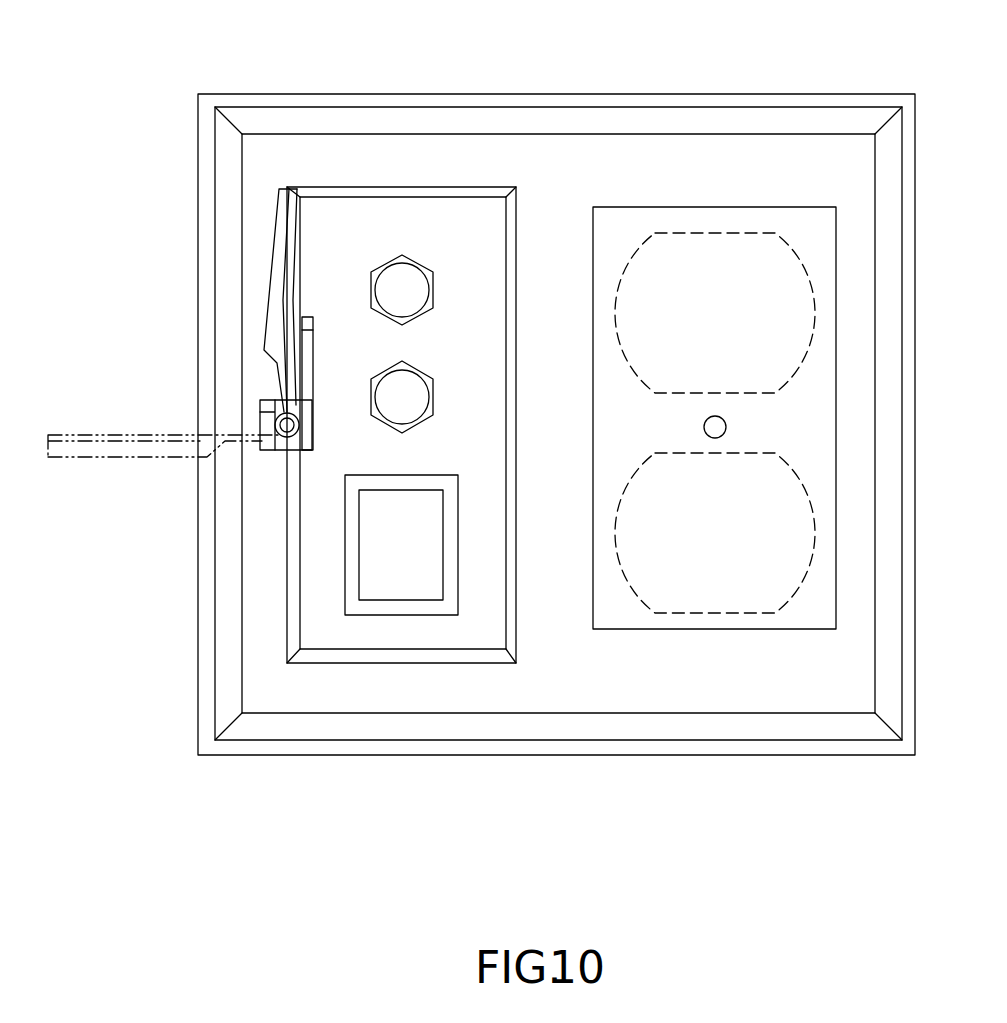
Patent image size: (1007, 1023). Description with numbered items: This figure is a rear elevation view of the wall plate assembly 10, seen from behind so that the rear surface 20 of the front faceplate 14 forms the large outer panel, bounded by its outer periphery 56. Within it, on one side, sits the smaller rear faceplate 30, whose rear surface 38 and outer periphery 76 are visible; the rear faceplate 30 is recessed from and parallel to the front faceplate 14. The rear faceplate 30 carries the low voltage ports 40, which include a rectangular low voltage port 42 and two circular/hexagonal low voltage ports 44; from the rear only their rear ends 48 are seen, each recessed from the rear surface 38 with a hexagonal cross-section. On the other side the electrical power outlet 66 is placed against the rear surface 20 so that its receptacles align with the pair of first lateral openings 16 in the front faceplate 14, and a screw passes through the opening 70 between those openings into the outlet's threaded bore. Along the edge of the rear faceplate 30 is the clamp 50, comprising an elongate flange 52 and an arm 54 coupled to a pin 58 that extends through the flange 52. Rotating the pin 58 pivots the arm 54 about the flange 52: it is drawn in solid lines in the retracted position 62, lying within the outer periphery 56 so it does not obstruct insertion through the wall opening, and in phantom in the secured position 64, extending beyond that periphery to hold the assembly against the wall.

The wall plate assembly 10 is at (506, 78).
The front faceplate 14 is at (528, 196).
The first lateral openings 16 is at (617, 303).
The rear surface 20 is at (620, 701).
The rear faceplate 30 is at (342, 180).
The rear surface 38 is at (315, 258).
The low voltage ports 40 is at (440, 289).
The rectangular low voltage port 42 is at (380, 571).
The circular/hexagonal low voltage ports 44 is at (418, 390).
The rear end 48 is at (398, 257).
The clamp 50 is at (326, 355).
The elongate flange 52 is at (318, 427).
The arm 54 is at (287, 238).
The outer periphery 56 is at (706, 93).
The pin 58 is at (280, 425).
The retracted position 62 is at (278, 305).
The secured position 64 is at (93, 452).
The electrical power outlet 66 is at (617, 448).
The opening 70 is at (726, 422).
The outer periphery 76 is at (322, 665).